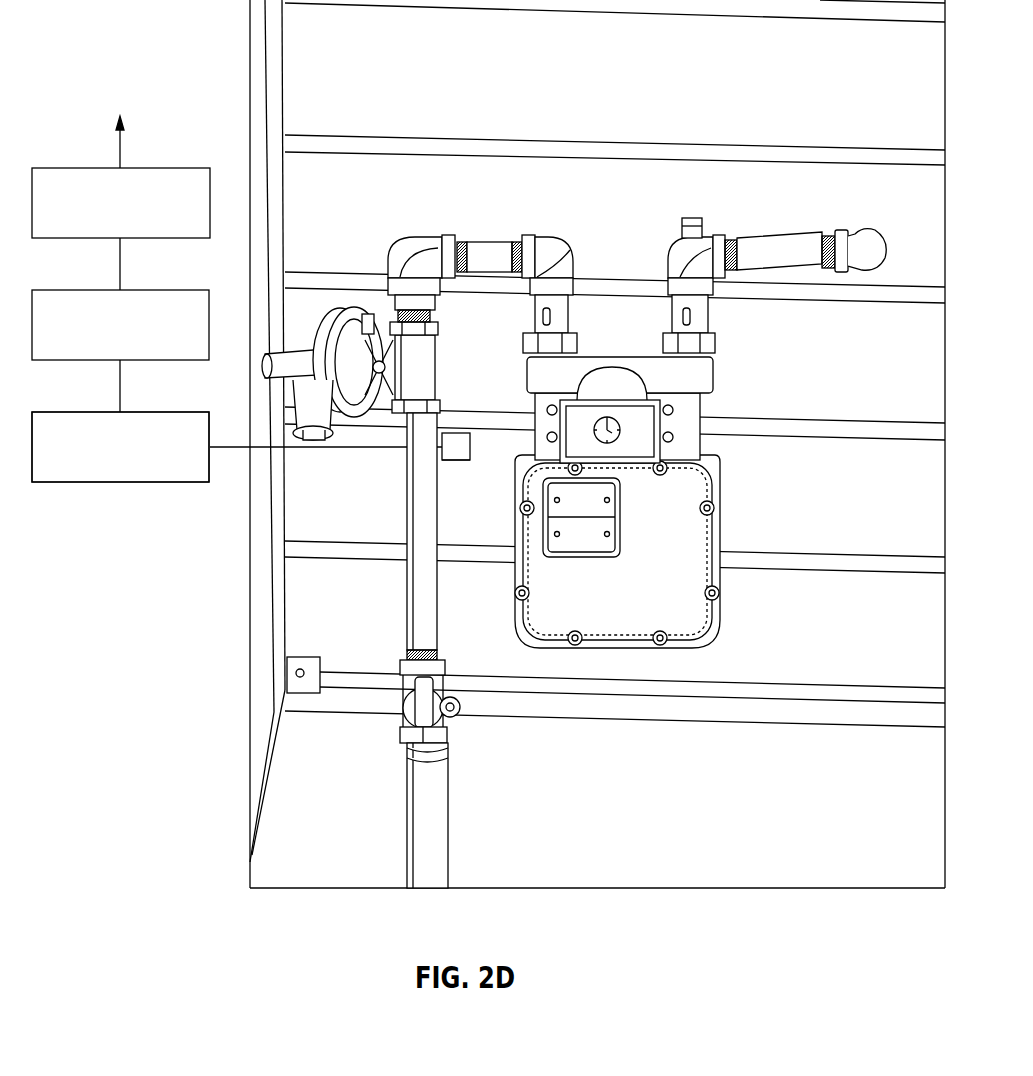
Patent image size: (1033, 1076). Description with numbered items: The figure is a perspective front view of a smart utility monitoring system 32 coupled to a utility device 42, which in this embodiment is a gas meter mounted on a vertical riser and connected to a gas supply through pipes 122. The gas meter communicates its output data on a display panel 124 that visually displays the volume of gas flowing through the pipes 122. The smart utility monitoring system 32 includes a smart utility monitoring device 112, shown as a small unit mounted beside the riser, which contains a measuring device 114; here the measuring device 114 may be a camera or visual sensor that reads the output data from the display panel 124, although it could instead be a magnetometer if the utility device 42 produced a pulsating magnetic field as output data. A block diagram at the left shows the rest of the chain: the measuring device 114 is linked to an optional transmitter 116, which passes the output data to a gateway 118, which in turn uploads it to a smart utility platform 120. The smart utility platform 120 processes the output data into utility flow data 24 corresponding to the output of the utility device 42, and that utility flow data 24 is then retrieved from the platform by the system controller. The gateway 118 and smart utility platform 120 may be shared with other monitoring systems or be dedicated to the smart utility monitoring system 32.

The utility flow data 24 is at (117, 140).
The smart utility platform 120 is at (102, 240).
The gateway 118 is at (100, 362).
The transmitter 116 is at (100, 484).
The smart utility monitoring system 32 is at (204, 484).
The pipes 122 is at (780, 248).
The display panel 124 is at (633, 420).
The utility device 42 is at (717, 520).
The measuring device 114 is at (452, 431).
The smart utility monitoring device 112 is at (457, 470).